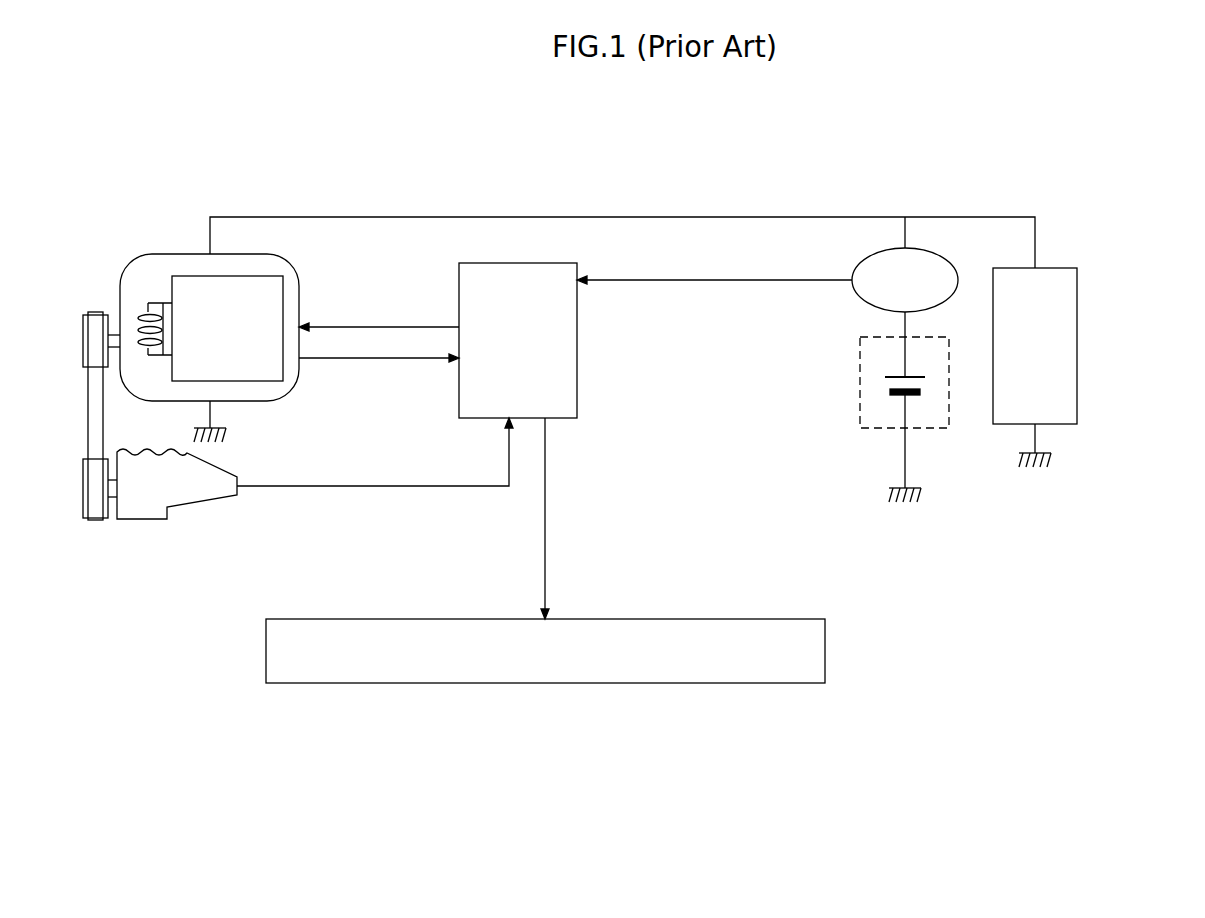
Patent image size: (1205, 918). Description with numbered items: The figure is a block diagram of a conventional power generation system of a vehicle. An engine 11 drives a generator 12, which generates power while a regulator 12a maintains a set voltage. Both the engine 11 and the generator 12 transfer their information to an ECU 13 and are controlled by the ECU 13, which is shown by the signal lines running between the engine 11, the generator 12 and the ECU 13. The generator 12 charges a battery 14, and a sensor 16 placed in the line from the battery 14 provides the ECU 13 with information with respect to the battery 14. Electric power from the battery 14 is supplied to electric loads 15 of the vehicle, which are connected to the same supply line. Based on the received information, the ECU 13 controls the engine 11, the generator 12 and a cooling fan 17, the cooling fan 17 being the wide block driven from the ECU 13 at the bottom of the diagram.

The engine 11 is at (138, 520).
The generator 12 is at (128, 258).
The regulator 12a is at (198, 276).
The ECU 13 is at (518, 263).
The battery 14 is at (948, 428).
The electric loads 15 is at (1078, 345).
The sensor 16 is at (931, 252).
The cooling fan 17 is at (682, 676).